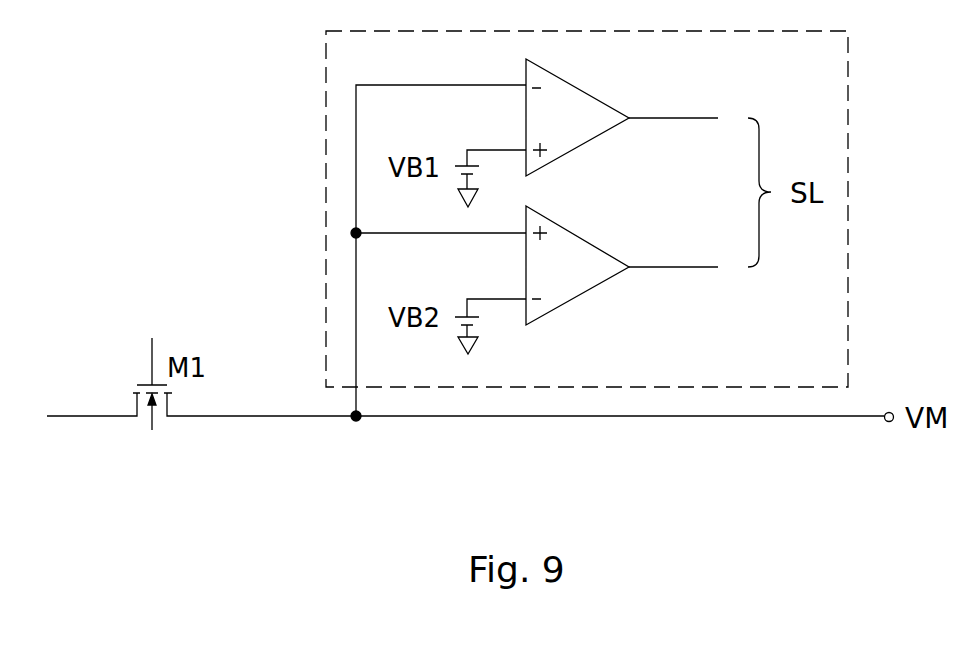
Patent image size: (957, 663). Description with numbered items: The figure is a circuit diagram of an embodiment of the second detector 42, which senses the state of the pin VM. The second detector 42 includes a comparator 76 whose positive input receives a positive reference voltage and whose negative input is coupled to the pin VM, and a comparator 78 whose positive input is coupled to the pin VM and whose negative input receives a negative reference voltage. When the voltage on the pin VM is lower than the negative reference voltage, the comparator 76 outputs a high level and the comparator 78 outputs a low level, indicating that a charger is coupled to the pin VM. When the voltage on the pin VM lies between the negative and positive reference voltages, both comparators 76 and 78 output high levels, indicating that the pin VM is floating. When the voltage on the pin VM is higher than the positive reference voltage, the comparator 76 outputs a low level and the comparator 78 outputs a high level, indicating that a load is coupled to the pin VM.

The second detector 42 is at (848, 87).
The comparator 76 is at (583, 91).
The comparator 78 is at (578, 237).